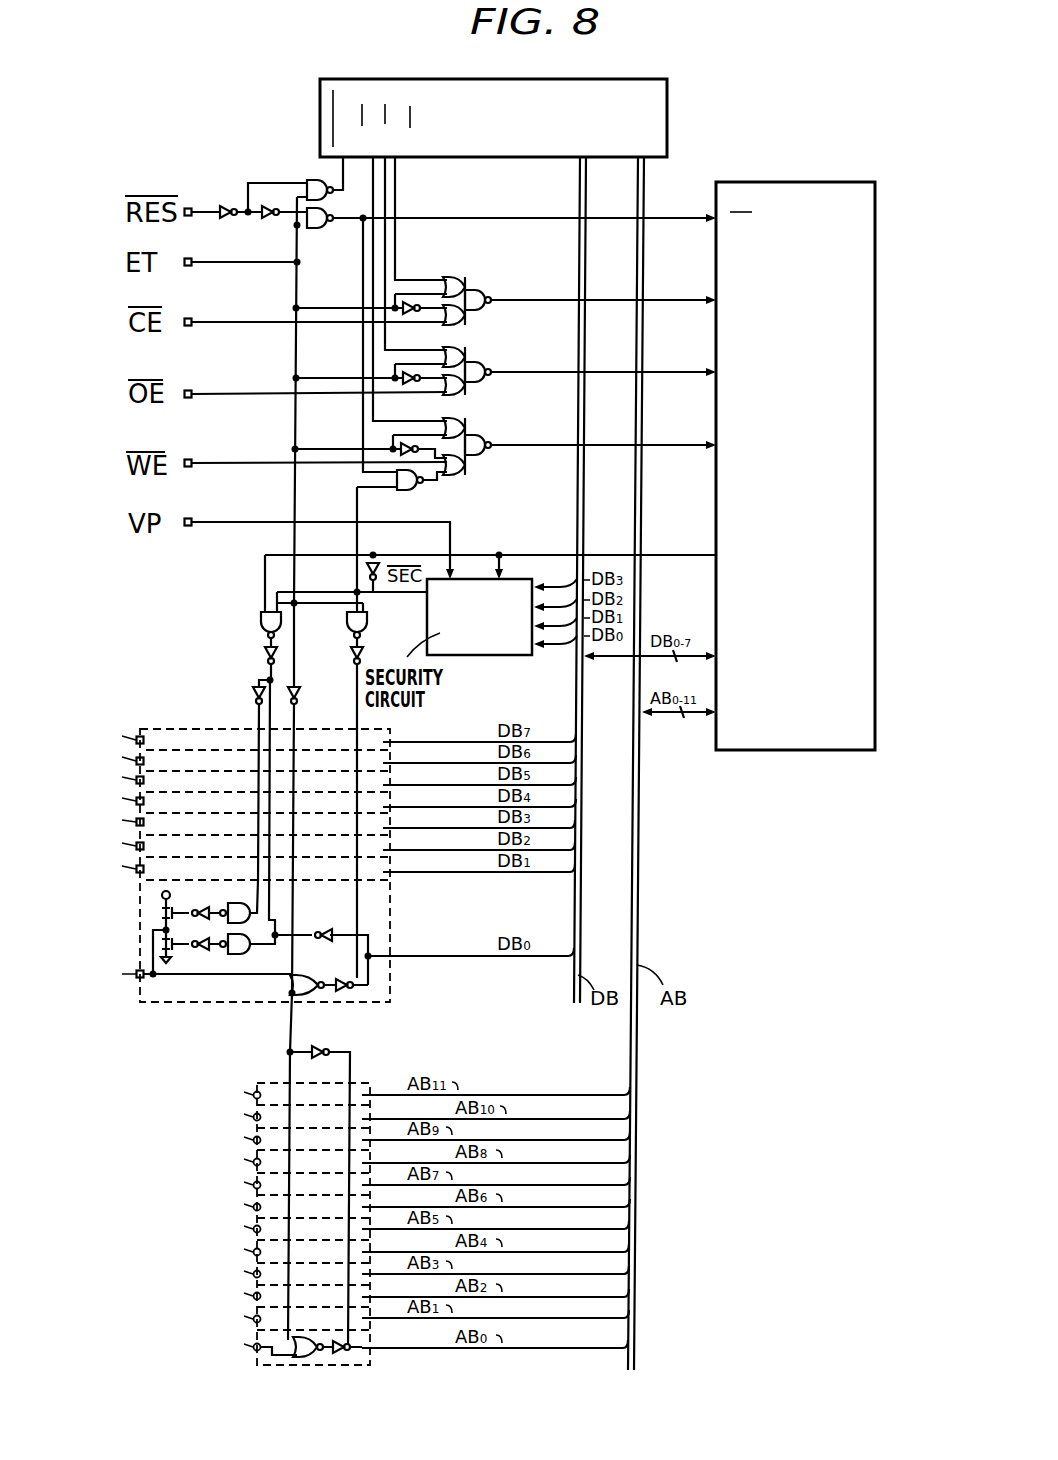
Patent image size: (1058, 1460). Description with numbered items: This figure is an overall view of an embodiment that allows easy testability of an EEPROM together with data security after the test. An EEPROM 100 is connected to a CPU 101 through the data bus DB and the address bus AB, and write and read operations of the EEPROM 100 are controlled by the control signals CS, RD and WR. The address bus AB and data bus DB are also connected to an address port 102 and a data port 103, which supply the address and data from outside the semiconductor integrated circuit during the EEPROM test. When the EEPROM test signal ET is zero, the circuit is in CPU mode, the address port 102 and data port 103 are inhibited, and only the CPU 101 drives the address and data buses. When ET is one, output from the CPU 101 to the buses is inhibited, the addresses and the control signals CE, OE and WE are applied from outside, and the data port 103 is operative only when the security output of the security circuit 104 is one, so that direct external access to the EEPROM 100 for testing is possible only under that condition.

The EEPROM 100 is at (787, 752).
The CPU 101 is at (667, 114).
The address port 102 is at (360, 1083).
The data port 103 is at (237, 1003).
The security circuit 104 is at (480, 657).